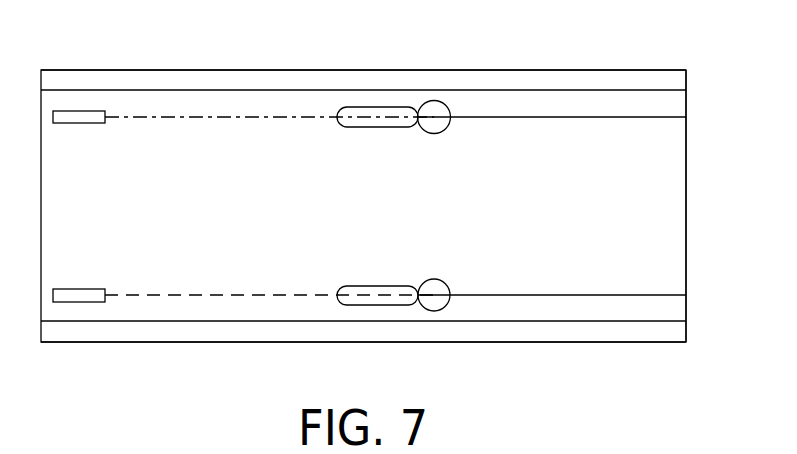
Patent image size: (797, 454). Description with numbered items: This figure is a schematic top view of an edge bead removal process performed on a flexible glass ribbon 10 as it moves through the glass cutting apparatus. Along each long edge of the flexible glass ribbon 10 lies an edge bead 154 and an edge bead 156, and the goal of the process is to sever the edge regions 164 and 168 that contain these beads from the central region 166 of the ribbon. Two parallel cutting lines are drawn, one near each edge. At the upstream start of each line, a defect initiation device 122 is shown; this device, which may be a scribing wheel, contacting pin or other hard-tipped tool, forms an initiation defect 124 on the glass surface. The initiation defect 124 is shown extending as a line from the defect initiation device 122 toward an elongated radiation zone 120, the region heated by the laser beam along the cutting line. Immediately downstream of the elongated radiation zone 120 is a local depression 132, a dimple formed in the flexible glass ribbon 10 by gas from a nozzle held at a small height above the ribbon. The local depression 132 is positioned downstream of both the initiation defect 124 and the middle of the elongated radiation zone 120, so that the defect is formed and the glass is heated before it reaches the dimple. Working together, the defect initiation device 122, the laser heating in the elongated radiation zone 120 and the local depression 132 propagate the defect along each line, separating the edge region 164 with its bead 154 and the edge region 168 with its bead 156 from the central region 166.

The flexible glass ribbon 10 is at (298, 100).
The elongated radiation zone 120 is at (372, 128).
The defect initiation device 122 is at (80, 123).
The initiation defect 124 is at (213, 118).
The local depression 132 is at (440, 128).
The edge bead 154 is at (530, 75).
The edge bead 156 is at (555, 330).
The edge region 164 is at (624, 97).
The central region 166 is at (674, 192).
The edge region 168 is at (476, 310).